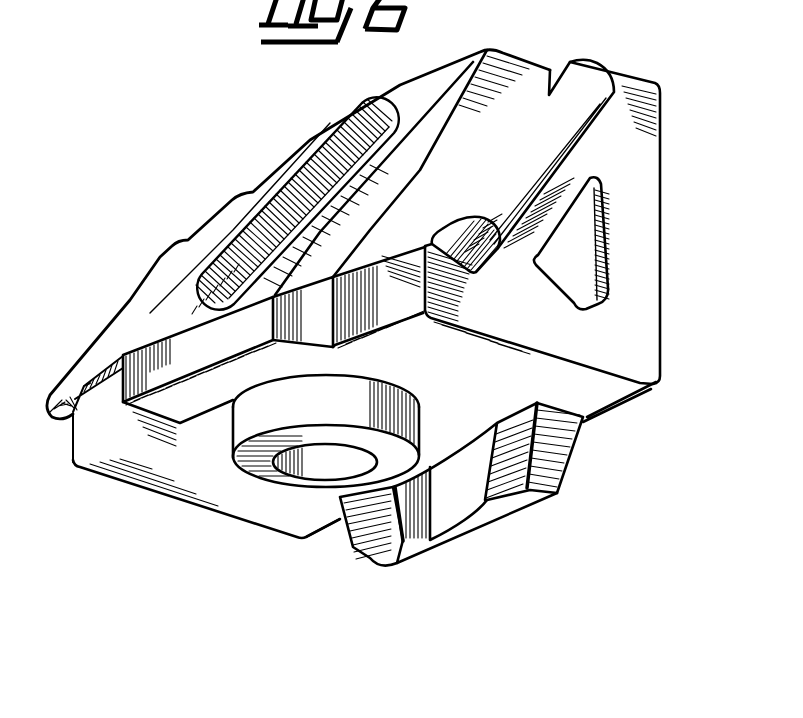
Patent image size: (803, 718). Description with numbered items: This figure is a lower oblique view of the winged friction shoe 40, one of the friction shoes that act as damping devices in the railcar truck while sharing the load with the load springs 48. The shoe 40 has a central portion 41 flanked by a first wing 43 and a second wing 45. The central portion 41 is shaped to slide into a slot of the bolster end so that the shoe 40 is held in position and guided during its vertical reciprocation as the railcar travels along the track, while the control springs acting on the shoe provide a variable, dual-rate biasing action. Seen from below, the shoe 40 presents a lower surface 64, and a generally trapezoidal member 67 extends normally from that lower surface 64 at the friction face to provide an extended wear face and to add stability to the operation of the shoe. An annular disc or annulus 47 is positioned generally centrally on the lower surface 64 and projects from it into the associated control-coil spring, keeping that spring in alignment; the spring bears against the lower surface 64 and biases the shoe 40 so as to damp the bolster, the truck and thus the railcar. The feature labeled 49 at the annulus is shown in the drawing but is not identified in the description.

The winged friction shoe 40 is at (616, 39).
The central portion 41 is at (304, 149).
The first wing 43 is at (130, 288).
The second wing 45 is at (582, 117).
The annular disc or annulus 47 is at (322, 496).
The load springs 48 is at (248, 422).
The hole 49 is at (328, 467).
The lower surface 64 is at (163, 492).
The generally trapezoidal member 67 is at (578, 452).